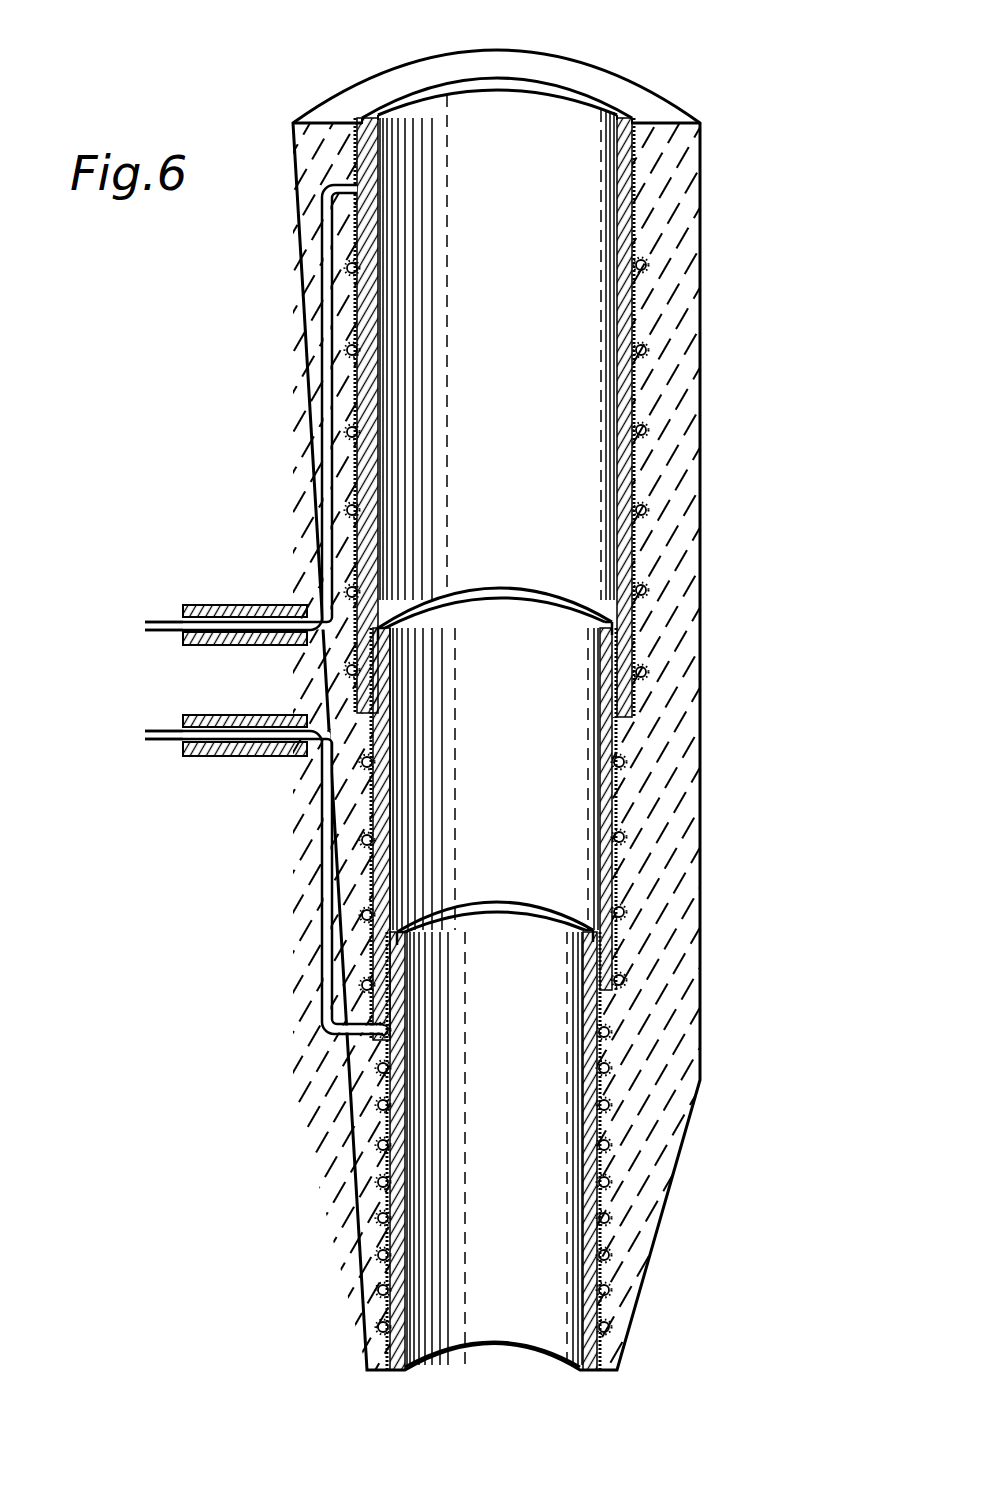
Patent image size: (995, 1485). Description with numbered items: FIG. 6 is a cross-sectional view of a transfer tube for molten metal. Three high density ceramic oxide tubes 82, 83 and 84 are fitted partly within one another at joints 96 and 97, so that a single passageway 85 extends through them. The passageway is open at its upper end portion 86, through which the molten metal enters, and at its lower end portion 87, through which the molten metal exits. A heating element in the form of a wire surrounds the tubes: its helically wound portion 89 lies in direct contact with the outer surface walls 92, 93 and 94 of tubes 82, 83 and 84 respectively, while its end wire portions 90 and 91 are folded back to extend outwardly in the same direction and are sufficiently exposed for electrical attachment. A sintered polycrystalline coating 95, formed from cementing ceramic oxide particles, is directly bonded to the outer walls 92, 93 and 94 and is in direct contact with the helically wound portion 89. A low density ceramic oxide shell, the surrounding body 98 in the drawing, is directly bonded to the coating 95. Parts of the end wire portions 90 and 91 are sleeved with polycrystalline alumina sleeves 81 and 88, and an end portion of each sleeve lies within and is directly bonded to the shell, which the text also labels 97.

The polycrystalline alumina sleeve 81 is at (245, 710).
The high density ceramic oxide tube 82 is at (496, 689).
The high density ceramic oxide tube 83 is at (495, 574).
The high density ceramic oxide tube 84 is at (495, 893).
The passageway 85 is at (583, 730).
The upper end portion 86 is at (497, 66).
The lower end portion 87 is at (492, 1365).
The polycrystalline alumina sleeve 88 is at (245, 577).
The helically wound portion 89 is at (264, 916).
The end wire portion 90 is at (194, 597).
The end wire portion 91 is at (205, 773).
The outer surface wall 92 is at (569, 417).
The outer surface wall 93 is at (574, 834).
The outer surface wall 94 is at (424, 1151).
The sintered polycrystalline coating 95 is at (565, 625).
The joint 96 is at (572, 1164).
The joint 97 is at (375, 430).
The insulating body 98 is at (535, 746).